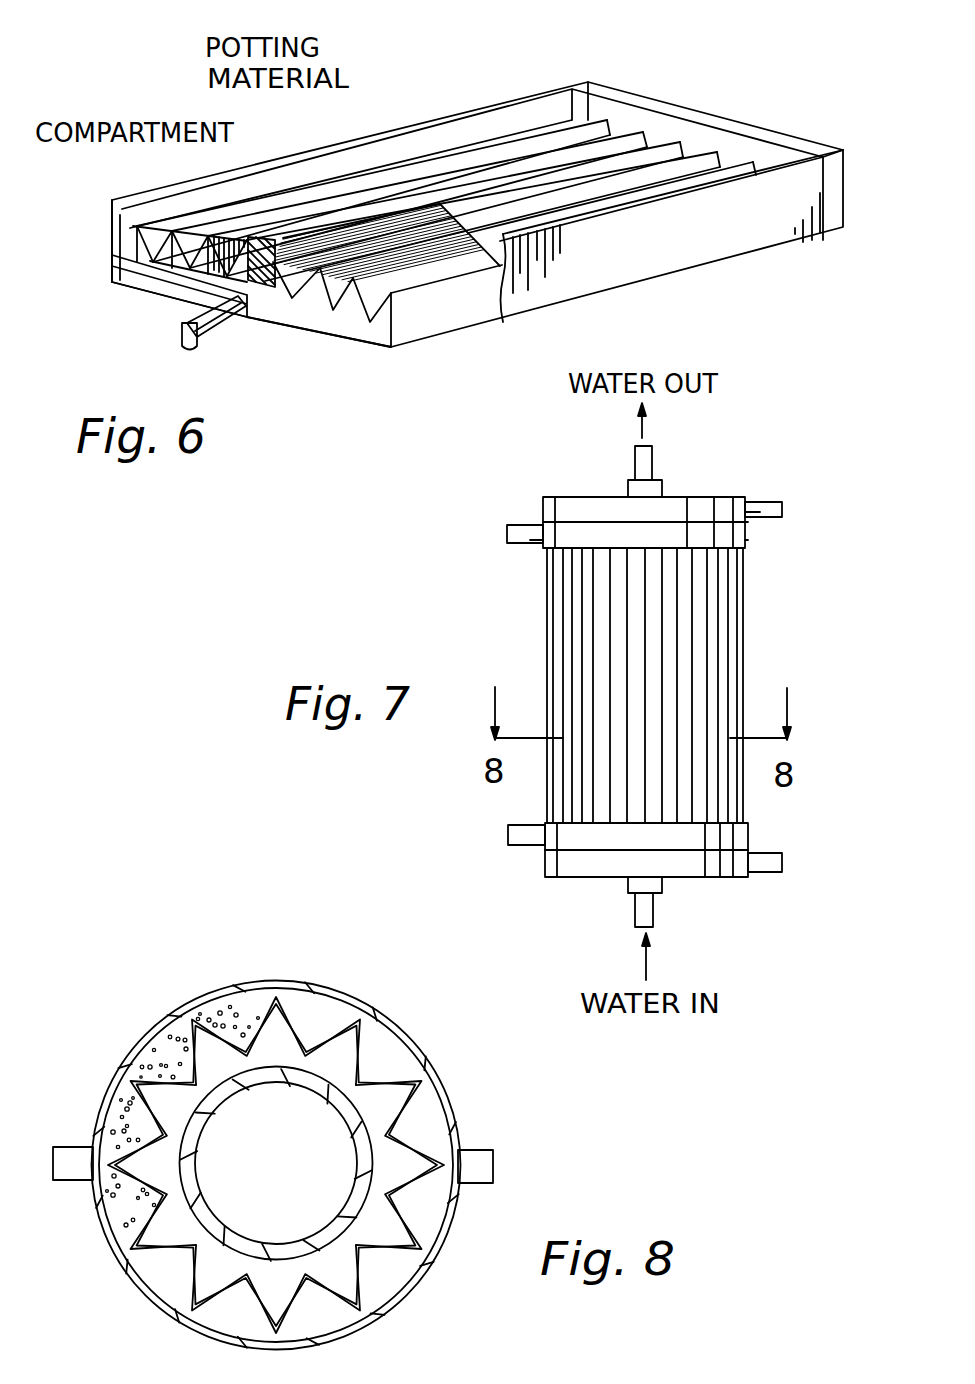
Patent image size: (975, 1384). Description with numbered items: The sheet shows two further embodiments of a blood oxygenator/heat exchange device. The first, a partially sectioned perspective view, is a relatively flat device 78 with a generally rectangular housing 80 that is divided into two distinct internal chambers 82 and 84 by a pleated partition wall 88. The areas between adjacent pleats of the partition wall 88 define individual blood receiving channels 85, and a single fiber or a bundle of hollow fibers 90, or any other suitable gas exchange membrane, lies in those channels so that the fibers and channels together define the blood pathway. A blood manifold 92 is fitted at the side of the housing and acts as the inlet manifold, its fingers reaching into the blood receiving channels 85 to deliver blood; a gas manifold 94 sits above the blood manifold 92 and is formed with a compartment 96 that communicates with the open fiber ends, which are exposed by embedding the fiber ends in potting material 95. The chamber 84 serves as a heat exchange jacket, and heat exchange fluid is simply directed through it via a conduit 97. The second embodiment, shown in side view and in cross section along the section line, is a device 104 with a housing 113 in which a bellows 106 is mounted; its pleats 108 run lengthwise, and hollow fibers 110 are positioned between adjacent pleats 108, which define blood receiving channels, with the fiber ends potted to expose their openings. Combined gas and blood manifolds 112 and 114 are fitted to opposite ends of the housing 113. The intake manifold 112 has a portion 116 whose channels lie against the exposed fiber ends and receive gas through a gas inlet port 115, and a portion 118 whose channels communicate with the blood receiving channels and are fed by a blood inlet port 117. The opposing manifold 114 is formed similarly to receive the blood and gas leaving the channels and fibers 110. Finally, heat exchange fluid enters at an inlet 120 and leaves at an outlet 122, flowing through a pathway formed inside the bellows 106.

In FIG. 6, the device 78 is at (460, 88).
In FIG. 6, the housing 80 is at (847, 222).
In FIG. 6, the chamber 82 is at (378, 217).
In FIG. 6, the chamber 84 is at (364, 326).
In FIG. 6, the blood receiving channels 85 is at (388, 336).
In FIG. 6, the pleated partition wall 88 is at (326, 311).
In FIG. 6, the hollow fibers 90 is at (315, 301).
In FIG. 6, the blood manifold 92 is at (110, 252).
In FIG. 6, the gas manifold 94 is at (110, 236).
In FIG. 6, the potting material 95 is at (292, 248).
In FIG. 6, the compartment 96 is at (248, 230).
In FIG. 6, the conduit 97 is at (180, 332).
In FIG. 7, the device 104 is at (671, 683).
In FIG. 8, the bellows 106 is at (360, 1047).
In FIG. 8, the pleats 108 is at (393, 1078).
In FIG. 8, the hollow fibers 110 is at (237, 1005).
In FIG. 7, the manifold 112 is at (747, 530).
In FIG. 7, the housing 113 is at (740, 628).
In FIG. 7, the manifold 114 is at (750, 833).
In FIG. 7, the gas inlet port 115 is at (523, 545).
In FIG. 7, the portion 116 is at (568, 530).
In FIG. 7, the blood inlet port 117 is at (773, 503).
In FIG. 7, the portion 118 is at (707, 497).
In FIG. 7, the inlet 120 is at (653, 920).
In FIG. 7, the outlet 122 is at (652, 460).